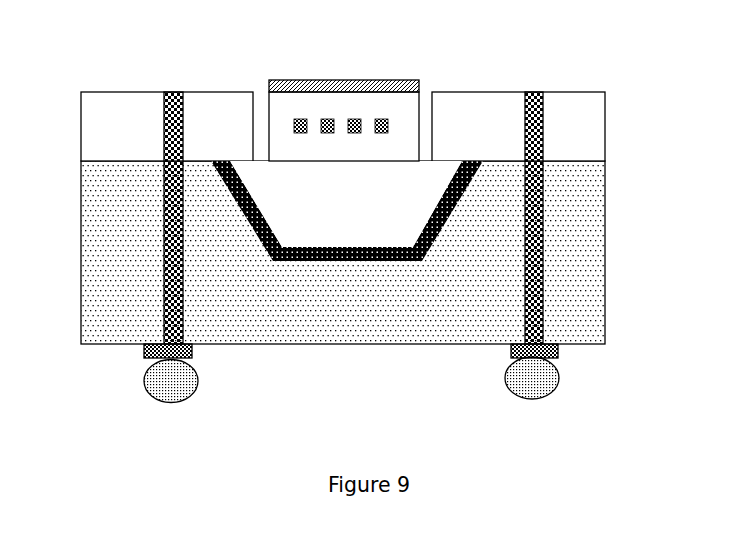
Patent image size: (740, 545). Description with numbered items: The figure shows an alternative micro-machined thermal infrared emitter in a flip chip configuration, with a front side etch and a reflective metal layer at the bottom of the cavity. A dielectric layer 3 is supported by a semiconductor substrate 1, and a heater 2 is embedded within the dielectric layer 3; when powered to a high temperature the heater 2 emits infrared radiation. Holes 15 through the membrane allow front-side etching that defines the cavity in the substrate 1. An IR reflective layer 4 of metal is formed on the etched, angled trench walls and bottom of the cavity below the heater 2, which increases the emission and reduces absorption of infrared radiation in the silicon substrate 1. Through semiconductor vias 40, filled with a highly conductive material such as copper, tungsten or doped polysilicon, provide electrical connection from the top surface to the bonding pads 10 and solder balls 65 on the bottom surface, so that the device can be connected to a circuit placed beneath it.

The semiconductor substrate 1 is at (587, 231).
The heater 2 is at (351, 142).
The dielectric layer 3 is at (590, 119).
The IR reflective layer 4 is at (361, 238).
The bonding pads 10 is at (505, 352).
The holes 15 is at (262, 84).
The through semiconductor vias 40 is at (549, 289).
The solder balls 65 is at (565, 372).